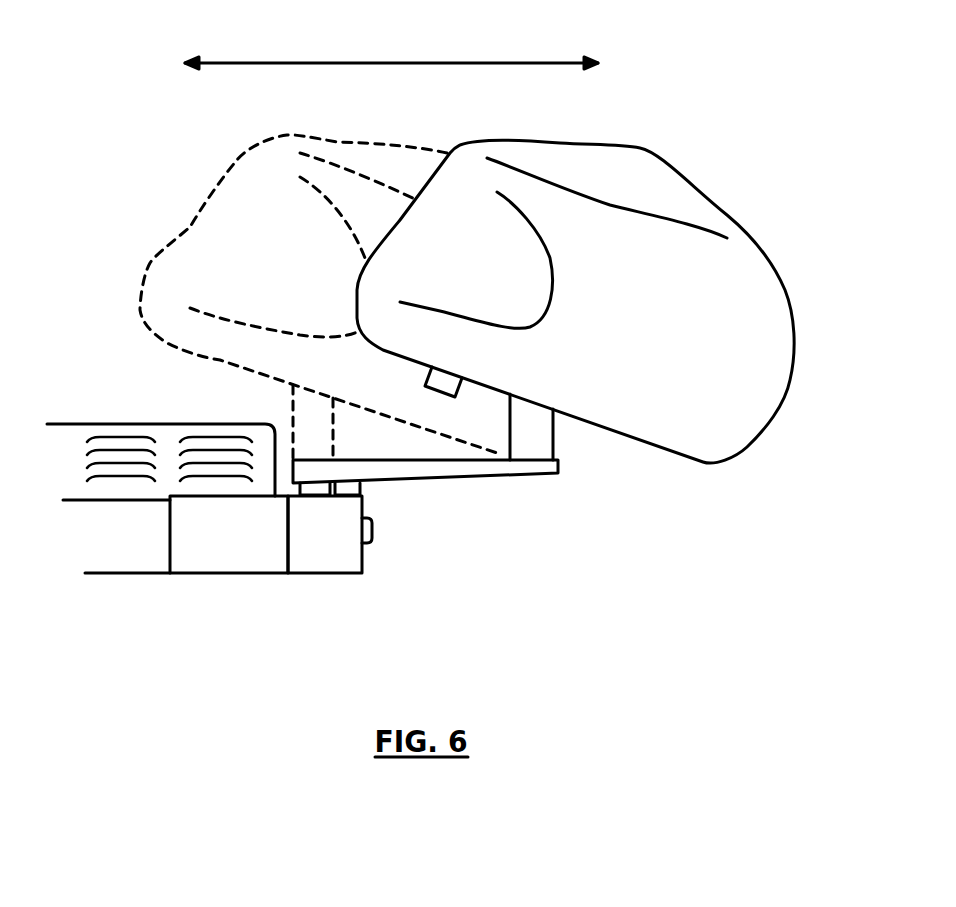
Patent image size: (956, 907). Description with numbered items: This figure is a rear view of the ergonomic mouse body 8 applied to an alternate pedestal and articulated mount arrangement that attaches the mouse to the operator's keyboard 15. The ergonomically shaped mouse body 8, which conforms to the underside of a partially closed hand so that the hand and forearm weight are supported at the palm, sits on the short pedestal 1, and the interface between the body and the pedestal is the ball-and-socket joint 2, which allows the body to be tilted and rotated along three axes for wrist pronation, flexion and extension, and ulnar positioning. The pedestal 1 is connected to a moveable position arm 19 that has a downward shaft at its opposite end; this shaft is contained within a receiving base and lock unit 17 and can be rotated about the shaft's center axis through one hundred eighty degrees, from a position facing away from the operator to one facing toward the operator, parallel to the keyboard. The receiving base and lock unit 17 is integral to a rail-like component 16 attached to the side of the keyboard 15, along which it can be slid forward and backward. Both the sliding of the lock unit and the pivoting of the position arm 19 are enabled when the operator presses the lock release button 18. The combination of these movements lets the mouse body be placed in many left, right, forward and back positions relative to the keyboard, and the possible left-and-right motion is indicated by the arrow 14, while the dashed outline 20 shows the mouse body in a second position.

The pedestal 1 is at (555, 450).
The ball-and-socket joint 2 is at (555, 410).
The ergonomic mouse body 8 is at (795, 330).
The left-and-right motion 14 is at (391, 46).
The keyboard 15 is at (118, 573).
The rail-like component 16 is at (238, 573).
The receiving base and lock unit 17 is at (352, 573).
The lock release button 18 is at (368, 542).
The moveable position arm 19 is at (440, 482).
The alternate position of head unit (phantom) 20 is at (162, 250).